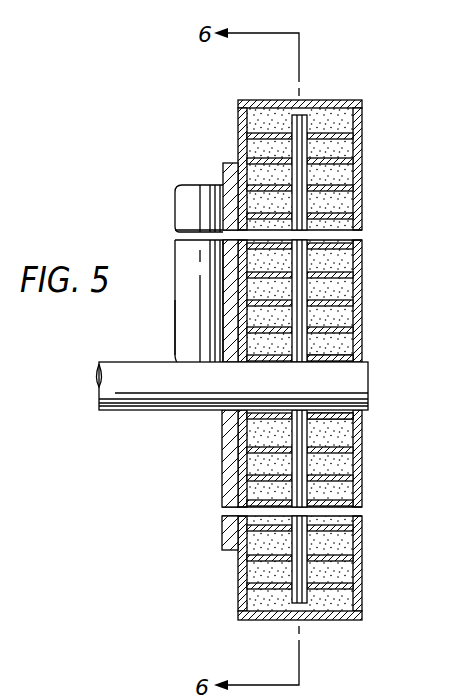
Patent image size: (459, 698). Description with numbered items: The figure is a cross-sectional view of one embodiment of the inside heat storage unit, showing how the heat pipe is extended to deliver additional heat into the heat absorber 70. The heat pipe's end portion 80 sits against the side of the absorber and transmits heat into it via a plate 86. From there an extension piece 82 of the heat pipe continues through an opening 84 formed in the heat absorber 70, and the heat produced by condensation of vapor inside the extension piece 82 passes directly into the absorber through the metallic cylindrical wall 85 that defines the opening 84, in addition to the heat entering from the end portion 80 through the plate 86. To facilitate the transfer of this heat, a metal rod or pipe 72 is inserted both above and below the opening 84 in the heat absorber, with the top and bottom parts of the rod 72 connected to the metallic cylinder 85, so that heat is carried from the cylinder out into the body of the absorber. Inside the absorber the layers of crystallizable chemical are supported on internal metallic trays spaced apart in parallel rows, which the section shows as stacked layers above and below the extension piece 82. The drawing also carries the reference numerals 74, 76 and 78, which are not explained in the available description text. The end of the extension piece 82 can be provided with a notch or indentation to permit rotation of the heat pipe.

The heat absorber 70 is at (362, 102).
The metal rod or pipe 72 is at (298, 205).
The separator plates 74 is at (340, 140).
The probe assembly 76 is at (157, 340).
The lead wires 78 is at (122, 395).
The end portion 80 is at (180, 197).
The extension piece 82 is at (356, 381).
The opening 84 is at (340, 418).
The metallic cylindrical wall 85 is at (335, 356).
The plate 86 is at (223, 165).